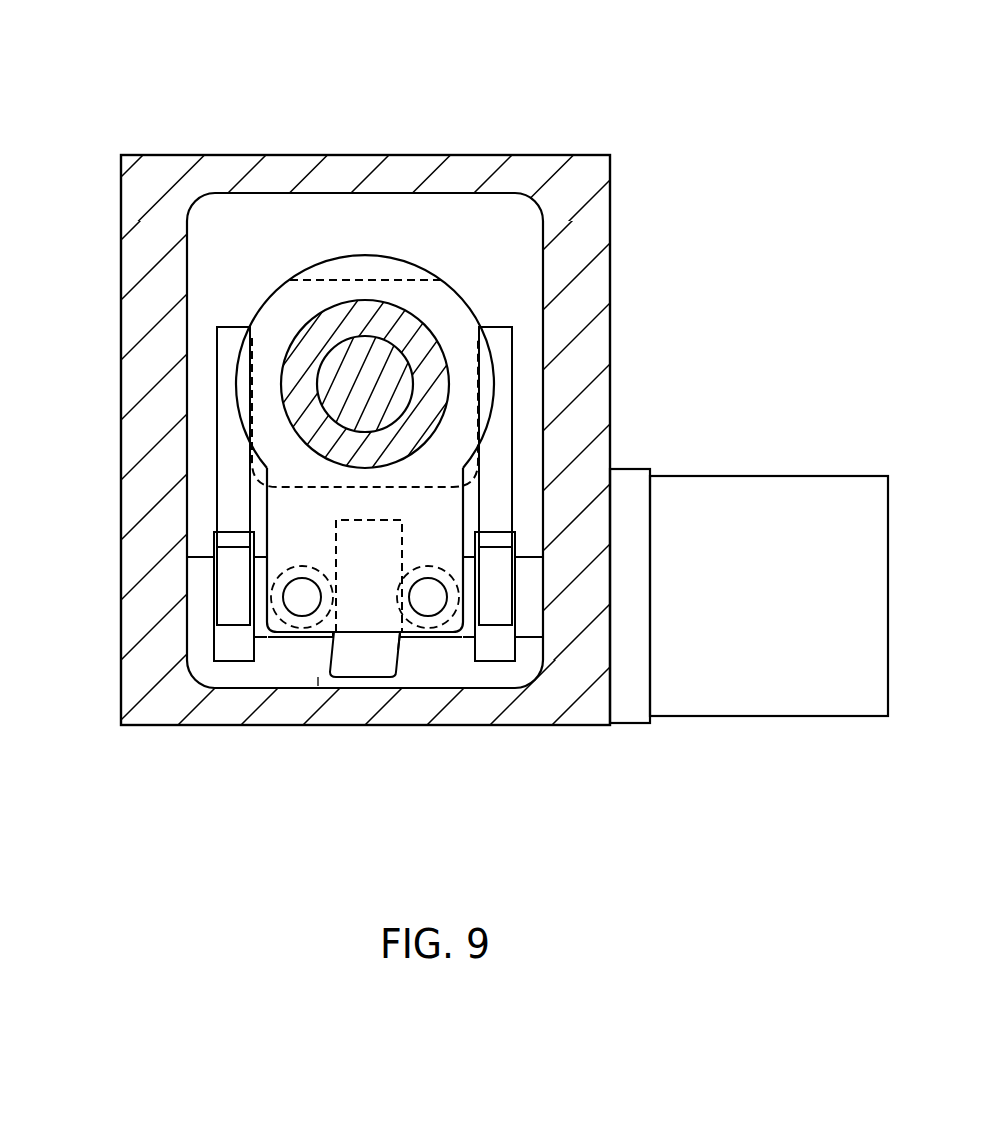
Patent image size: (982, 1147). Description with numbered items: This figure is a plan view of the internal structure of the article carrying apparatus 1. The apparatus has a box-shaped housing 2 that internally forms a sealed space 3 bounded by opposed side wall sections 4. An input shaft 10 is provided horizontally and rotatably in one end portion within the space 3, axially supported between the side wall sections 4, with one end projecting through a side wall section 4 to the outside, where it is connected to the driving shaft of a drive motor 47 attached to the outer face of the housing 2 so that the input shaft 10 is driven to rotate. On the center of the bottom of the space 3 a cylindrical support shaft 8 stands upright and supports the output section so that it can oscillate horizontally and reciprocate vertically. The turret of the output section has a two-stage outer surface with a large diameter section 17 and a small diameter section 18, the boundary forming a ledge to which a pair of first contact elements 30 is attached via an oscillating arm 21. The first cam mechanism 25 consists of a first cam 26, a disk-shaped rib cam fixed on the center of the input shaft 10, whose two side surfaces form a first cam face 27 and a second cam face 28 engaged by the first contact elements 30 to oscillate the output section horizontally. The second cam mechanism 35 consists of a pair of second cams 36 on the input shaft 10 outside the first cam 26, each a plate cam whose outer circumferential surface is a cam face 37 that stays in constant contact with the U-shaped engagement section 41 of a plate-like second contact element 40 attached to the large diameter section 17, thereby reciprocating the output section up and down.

The article carrying apparatus 1 is at (232, 108).
The housing 2 is at (632, 210).
The sealed space 3 is at (407, 173).
The side wall section 4 is at (597, 293).
The support shaft 8 is at (368, 350).
The input shaft 10 is at (548, 486).
The large diameter section 17 is at (465, 302).
The small diameter section 18 is at (312, 340).
The oscillating arm 21 is at (372, 268).
The first cam mechanism 25 is at (328, 650).
The first cam 26 is at (367, 665).
The first cam face 27 is at (312, 685).
The second cam face 28 is at (405, 645).
The first contact element 30 is at (419, 545).
The second cam mechanism 35 is at (200, 663).
The second cam 36 is at (228, 647).
The cam face 37 is at (227, 635).
The second contact element 40 is at (230, 455).
The engagement section 41 is at (227, 642).
The drive motor 47 is at (812, 487).